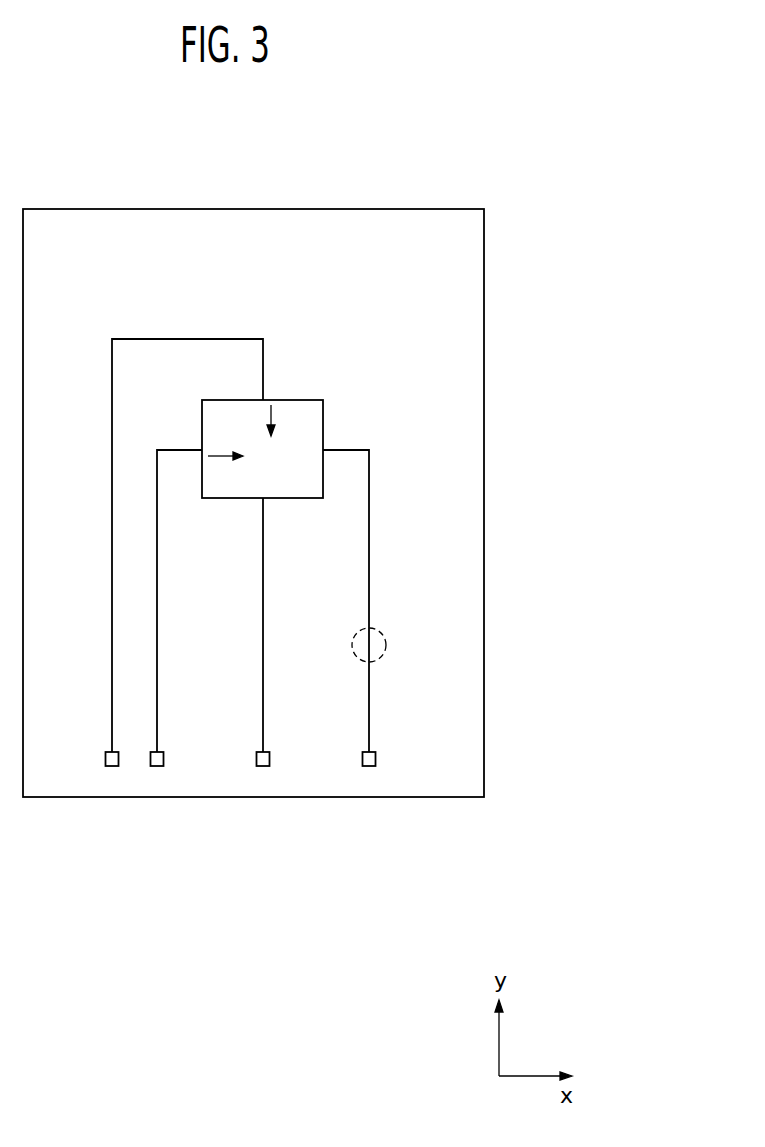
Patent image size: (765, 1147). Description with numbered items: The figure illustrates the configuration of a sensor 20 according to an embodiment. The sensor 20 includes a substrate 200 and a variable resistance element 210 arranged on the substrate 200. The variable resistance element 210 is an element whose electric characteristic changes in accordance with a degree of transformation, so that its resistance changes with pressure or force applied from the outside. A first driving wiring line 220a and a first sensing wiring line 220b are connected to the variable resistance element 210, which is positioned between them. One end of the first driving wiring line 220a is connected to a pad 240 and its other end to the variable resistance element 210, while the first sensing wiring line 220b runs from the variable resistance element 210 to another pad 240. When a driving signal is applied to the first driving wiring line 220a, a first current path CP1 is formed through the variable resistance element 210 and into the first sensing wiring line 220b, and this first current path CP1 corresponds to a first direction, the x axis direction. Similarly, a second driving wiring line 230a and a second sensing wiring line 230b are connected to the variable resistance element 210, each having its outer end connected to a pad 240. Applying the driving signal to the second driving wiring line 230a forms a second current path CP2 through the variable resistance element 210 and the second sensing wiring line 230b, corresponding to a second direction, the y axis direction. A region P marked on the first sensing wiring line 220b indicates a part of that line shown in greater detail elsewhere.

The sensor 20 is at (425, 148).
The substrate 200 is at (484, 314).
The variable resistance element 210 is at (307, 400).
The first driving wiring line 220a is at (172, 450).
The first sensing wiring line 220b is at (353, 450).
The second driving wiring line 230a is at (263, 366).
The second sensing wiring line 230b is at (263, 530).
The pad 240 is at (114, 766).
The region P is at (386, 640).
The first current path CP1 is at (225, 444).
The second current path CP2 is at (287, 420).